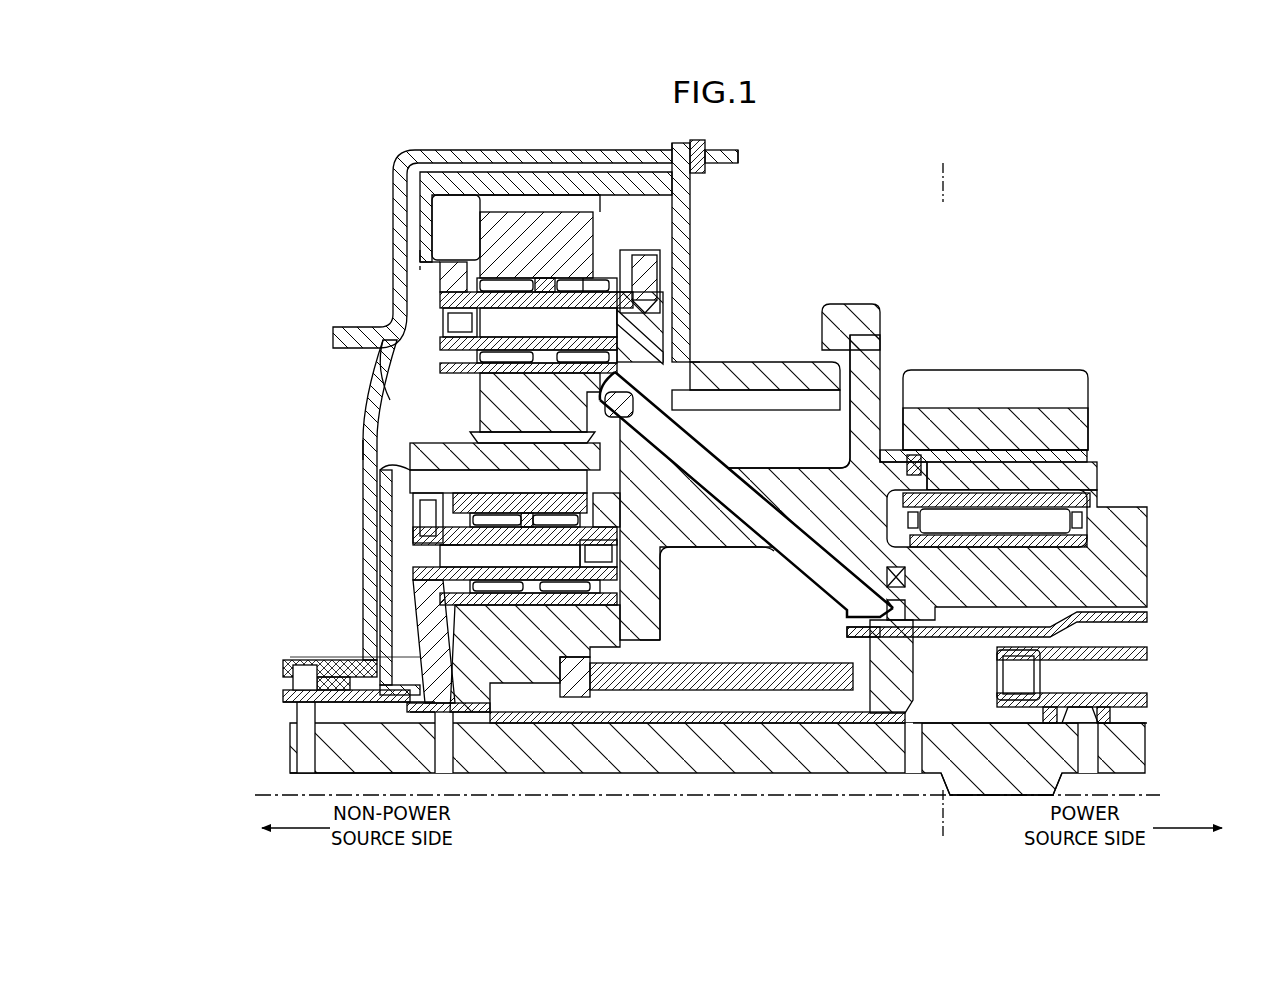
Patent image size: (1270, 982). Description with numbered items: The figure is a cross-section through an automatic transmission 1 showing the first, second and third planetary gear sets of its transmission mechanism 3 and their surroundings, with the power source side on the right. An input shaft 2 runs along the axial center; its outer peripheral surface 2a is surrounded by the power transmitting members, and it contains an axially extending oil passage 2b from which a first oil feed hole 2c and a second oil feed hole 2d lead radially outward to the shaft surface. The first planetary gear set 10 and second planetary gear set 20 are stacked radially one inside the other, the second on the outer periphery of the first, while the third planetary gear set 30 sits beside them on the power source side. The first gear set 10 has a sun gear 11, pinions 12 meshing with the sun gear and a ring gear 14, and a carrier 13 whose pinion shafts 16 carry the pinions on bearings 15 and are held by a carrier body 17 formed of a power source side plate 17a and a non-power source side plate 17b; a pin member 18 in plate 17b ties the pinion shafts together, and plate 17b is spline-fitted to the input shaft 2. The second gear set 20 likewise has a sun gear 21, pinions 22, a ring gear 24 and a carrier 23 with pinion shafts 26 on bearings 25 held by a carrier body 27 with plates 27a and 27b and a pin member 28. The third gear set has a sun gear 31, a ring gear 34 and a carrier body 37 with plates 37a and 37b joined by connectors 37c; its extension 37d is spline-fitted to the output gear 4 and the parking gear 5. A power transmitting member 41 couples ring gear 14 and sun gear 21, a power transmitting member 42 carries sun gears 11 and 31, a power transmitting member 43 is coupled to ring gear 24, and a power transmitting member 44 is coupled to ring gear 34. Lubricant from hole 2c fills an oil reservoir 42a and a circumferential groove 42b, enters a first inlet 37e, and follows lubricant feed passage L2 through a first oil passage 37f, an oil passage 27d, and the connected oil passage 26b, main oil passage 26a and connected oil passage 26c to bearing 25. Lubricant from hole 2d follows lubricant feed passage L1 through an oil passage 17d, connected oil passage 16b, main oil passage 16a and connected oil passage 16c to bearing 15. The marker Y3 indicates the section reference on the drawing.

The automatic transmission 1 is at (1030, 252).
The input shaft 2 is at (708, 767).
The projection of base 2a is at (1118, 795).
The oil passage 2b is at (290, 786).
The first oil feed hole 2c is at (905, 740).
The second oil feed hole 2d is at (452, 752).
The transmission mechanism 3 is at (755, 249).
The output gear 4 is at (1082, 385).
The parking gear 5 is at (847, 304).
The first planetary gear set 10 is at (408, 521).
The sun gear 11 is at (572, 677).
The pinion 12 is at (540, 615).
The carrier 13 is at (375, 615).
The ring gear 14 is at (460, 450).
The bearing 15 is at (405, 450).
The pinion shaft 16 is at (487, 595).
The main oil passage 16a is at (435, 530).
The connected oil passage 16b is at (460, 548).
The connected oil passage 16c is at (390, 400).
The carrier body 17 is at (400, 590).
The power source side plate 17a is at (652, 640).
The non-power source side plate 17b is at (395, 475).
The oil passage 17d is at (430, 610).
The pin member 18 is at (405, 512).
The second planetary gear set 20 is at (430, 266).
The sun gear 21 is at (527, 450).
The pinion 22 is at (580, 215).
The carrier 23 is at (440, 288).
The ring gear 24 is at (562, 175).
The bearing 25 is at (510, 283).
The pinion shaft 26 is at (608, 235).
The main oil passage 26a is at (583, 290).
The connected oil passage 26b is at (637, 347).
The connected oil passage 26c is at (523, 287).
The carrier body 27 is at (657, 248).
The power source side plate 27a is at (626, 251).
The non-power source side plate 27b is at (438, 262).
The oil passage 27d is at (676, 393).
The pin member 28 is at (643, 277).
The third planetary gear set 30 is at (708, 344).
The sun gear 31 is at (690, 682).
The ring gear 34 is at (785, 362).
The carrier body 37 is at (920, 519).
The power source side plate 37a is at (875, 470).
The non-power source side plate 37b is at (657, 567).
The connector 37c is at (787, 467).
The extension 37d is at (1085, 485).
The first inlet 37e is at (905, 617).
The first oil passage 37f is at (878, 410).
The power transmitting member 41 is at (286, 697).
The power transmitting member 42 is at (1133, 617).
The oil reservoir 42a is at (1030, 685).
The circumferential groove 42b is at (850, 628).
The power transmitting member 43 is at (284, 669).
The power transmitting member 44 is at (560, 152).
The lubricant feed passage for the first gear set L1 is at (420, 662).
The lubricant feed passage for the second gear set L2 is at (787, 562).
The direction Y3 is at (947, 178).